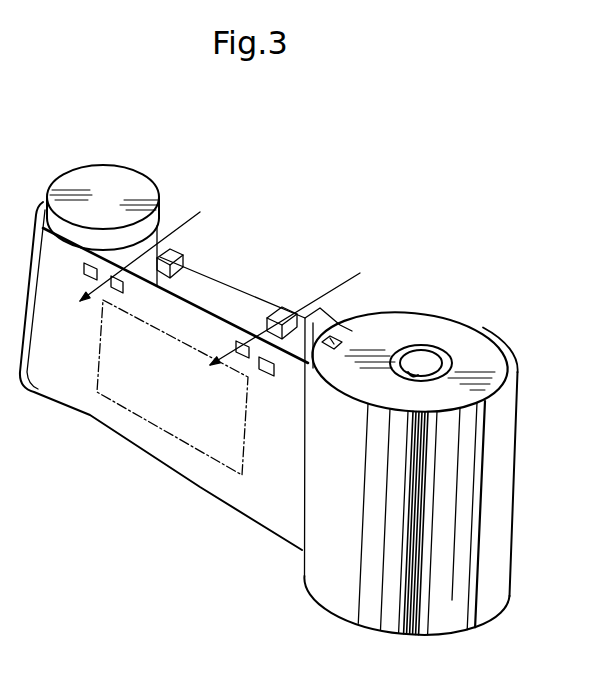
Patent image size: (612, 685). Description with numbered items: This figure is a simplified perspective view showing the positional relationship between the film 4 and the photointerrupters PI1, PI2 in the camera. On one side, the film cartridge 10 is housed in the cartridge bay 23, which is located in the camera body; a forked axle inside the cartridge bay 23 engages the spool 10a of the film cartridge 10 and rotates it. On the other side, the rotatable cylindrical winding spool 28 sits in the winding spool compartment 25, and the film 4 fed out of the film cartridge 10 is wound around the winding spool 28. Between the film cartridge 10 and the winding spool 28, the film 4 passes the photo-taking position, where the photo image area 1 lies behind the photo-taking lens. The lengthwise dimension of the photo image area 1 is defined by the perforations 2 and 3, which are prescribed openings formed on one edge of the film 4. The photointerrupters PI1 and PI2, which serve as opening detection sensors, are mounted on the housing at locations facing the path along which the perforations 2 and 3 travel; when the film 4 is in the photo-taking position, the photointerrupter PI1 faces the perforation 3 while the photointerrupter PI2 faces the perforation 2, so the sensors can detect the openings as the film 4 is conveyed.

The photo image area 1 is at (215, 440).
The perforation 2 is at (230, 276).
The perforation 3 is at (233, 340).
The film 4 is at (112, 418).
The film cartridge 10 is at (458, 340).
The spool 10a is at (417, 347).
The cartridge bay 23 is at (497, 337).
The winding spool compartment 25 is at (160, 228).
The winding spool 28 is at (95, 183).
The photointerrupter PI1 is at (283, 312).
The photointerrupter PI2 is at (183, 262).